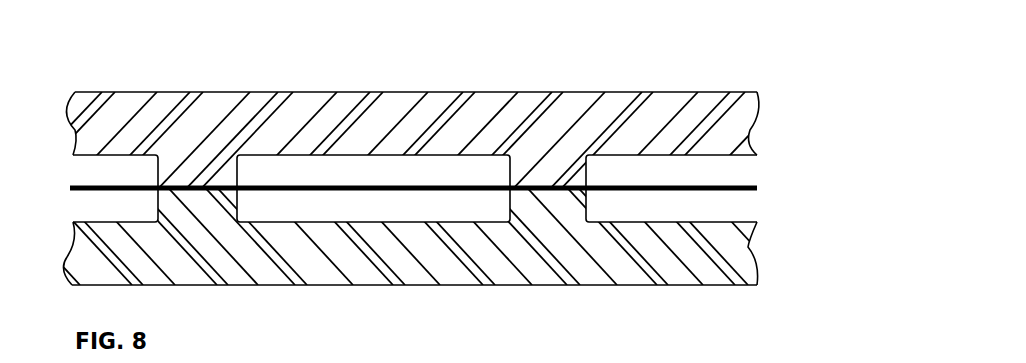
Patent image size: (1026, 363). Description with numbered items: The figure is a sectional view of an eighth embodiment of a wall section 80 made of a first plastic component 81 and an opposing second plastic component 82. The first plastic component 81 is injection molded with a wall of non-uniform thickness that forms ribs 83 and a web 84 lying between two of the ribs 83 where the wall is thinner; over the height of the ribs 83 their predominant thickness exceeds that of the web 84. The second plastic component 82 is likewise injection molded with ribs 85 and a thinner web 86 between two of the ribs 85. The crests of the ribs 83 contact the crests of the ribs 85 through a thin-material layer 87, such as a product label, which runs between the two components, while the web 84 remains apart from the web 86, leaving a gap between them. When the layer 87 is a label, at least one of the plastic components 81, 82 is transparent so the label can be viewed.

The wall section 80 is at (76, 92).
The first plastic component 81 is at (757, 102).
The second plastic component 82 is at (757, 262).
The ribs 83 is at (158, 170).
The web 84 is at (347, 157).
The ribs 85 is at (158, 204).
The web 86 is at (437, 220).
The thin-material layer 87 is at (757, 185).